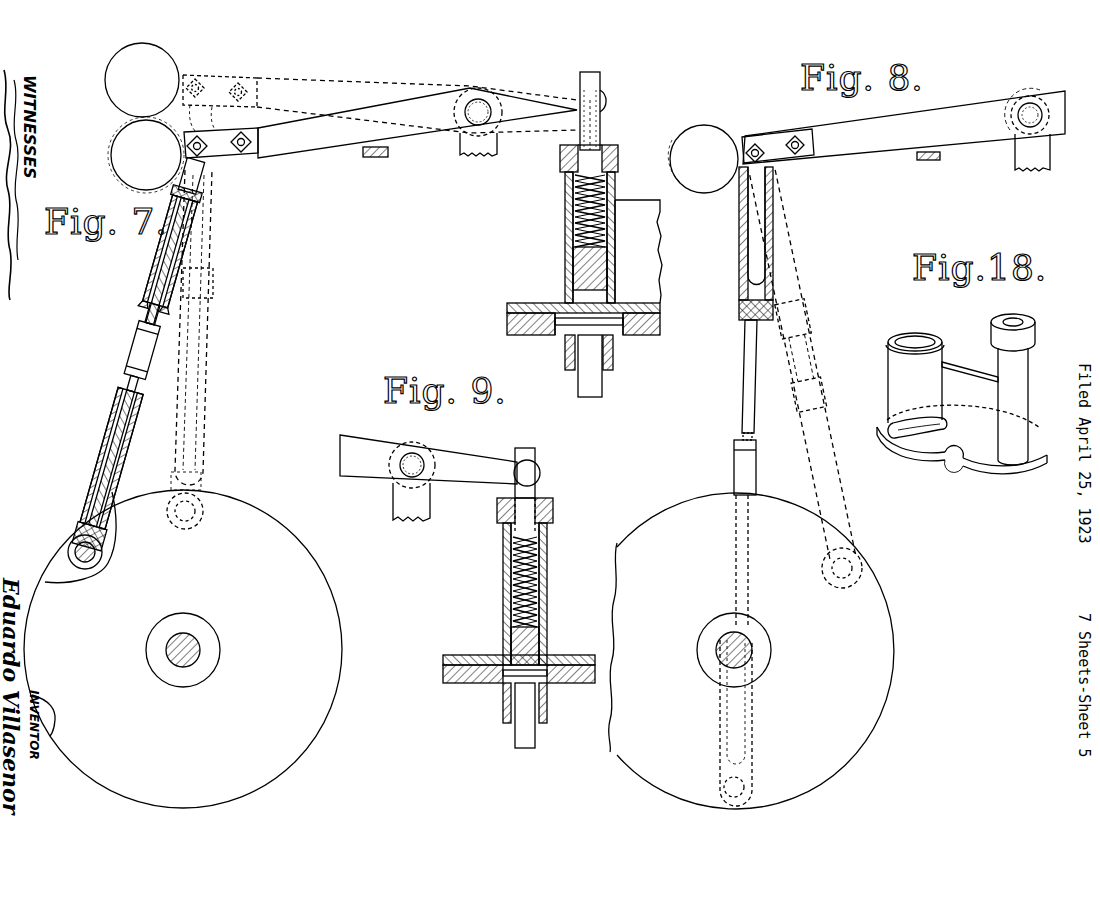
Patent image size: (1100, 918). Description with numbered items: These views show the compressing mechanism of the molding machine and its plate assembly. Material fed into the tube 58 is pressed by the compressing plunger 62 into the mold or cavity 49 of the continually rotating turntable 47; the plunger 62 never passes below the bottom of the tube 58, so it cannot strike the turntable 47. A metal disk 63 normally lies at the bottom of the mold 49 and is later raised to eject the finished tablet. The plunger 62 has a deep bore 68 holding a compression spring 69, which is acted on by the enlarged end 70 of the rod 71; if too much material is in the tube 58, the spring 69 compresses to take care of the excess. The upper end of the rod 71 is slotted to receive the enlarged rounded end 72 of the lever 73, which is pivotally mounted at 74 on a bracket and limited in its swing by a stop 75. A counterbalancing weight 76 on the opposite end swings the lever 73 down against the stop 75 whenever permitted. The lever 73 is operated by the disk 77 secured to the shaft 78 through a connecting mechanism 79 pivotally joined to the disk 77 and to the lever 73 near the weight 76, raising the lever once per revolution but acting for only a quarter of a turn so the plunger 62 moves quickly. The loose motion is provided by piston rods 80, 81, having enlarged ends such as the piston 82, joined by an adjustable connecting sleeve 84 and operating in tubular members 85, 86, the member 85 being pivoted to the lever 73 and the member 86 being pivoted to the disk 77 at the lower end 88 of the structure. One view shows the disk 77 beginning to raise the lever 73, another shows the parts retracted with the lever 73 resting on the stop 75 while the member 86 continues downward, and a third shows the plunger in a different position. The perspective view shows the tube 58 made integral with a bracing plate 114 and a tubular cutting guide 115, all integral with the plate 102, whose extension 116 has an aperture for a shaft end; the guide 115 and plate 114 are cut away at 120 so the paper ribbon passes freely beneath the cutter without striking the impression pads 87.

In FIG. 7, the turntable 47 is at (660, 332).
In FIG. 9, the turntable 47 is at (452, 686).
In FIG. 7, the mold or cavity 49 is at (564, 334).
In FIG. 9, the mold or cavity 49 is at (503, 684).
In FIG. 7, the tube 58 is at (610, 260).
In FIG. 9, the tube 58 is at (548, 616).
In FIG. 18, the tube 58 is at (1022, 404).
In FIG. 7, the compressing plunger 62 is at (580, 274).
In FIG. 9, the compressing plunger 62 is at (545, 656).
In FIG. 7, the metal disk 63 is at (618, 337).
In FIG. 9, the metal disk 63 is at (552, 685).
In FIG. 7, the bore 68 is at (616, 172).
In FIG. 9, the bore 68 is at (548, 560).
In FIG. 7, the compression spring 69 is at (574, 208).
In FIG. 9, the compression spring 69 is at (512, 572).
In FIG. 7, the enlarged end 70 is at (610, 150).
In FIG. 9, the enlarged end 70 is at (514, 536).
In FIG. 7, the rod 71 is at (600, 125).
In FIG. 7, the enlarged rounded end 72 is at (603, 92).
In FIG. 9, the enlarged rounded end 72 is at (546, 480).
In FIG. 7, the lever 73 is at (523, 100).
In FIG. 8, the lever 73 is at (928, 112).
In FIG. 9, the lever 73 is at (462, 460).
In FIG. 7, the pivot 74 is at (480, 110).
In FIG. 8, the pivot 74 is at (1030, 108).
In FIG. 9, the pivot 74 is at (406, 473).
In FIG. 7, the stop 75 is at (372, 158).
In FIG. 8, the stop 75 is at (928, 162).
In FIG. 7, the counterbalancing weight 76 is at (132, 158).
In FIG. 8, the counterbalancing weight 76 is at (708, 132).
In FIG. 7, the disk 77 is at (334, 612).
In FIG. 8, the disk 77 is at (883, 615).
In FIG. 7, the shaft 78 is at (200, 650).
In FIG. 8, the shaft 78 is at (750, 660).
In FIG. 7, the connecting mechanism 79 is at (204, 358).
In FIG. 8, the connecting mechanism 79 is at (745, 392).
In FIG. 7, the piston rod 80 is at (170, 263).
In FIG. 7, the piston rod 81 is at (122, 433).
In FIG. 7, the piston 82 is at (186, 195).
In FIG. 7, the connecting sleeve 84 is at (136, 346).
In FIG. 7, the tubular member 85 is at (200, 230).
In FIG. 7, the tubular member 86 is at (126, 473).
In FIG. 7, the impression pads 87 is at (111, 458).
In FIG. 7, the end cap 88 is at (86, 530).
In FIG. 18, the plate 102 is at (1024, 466).
In FIG. 18, the bracing plate 114 is at (958, 372).
In FIG. 18, the tubular cutting guide 115 is at (897, 372).
In FIG. 18, the extension 116 is at (964, 470).
In FIG. 18, the cut-away opening 120 is at (907, 437).